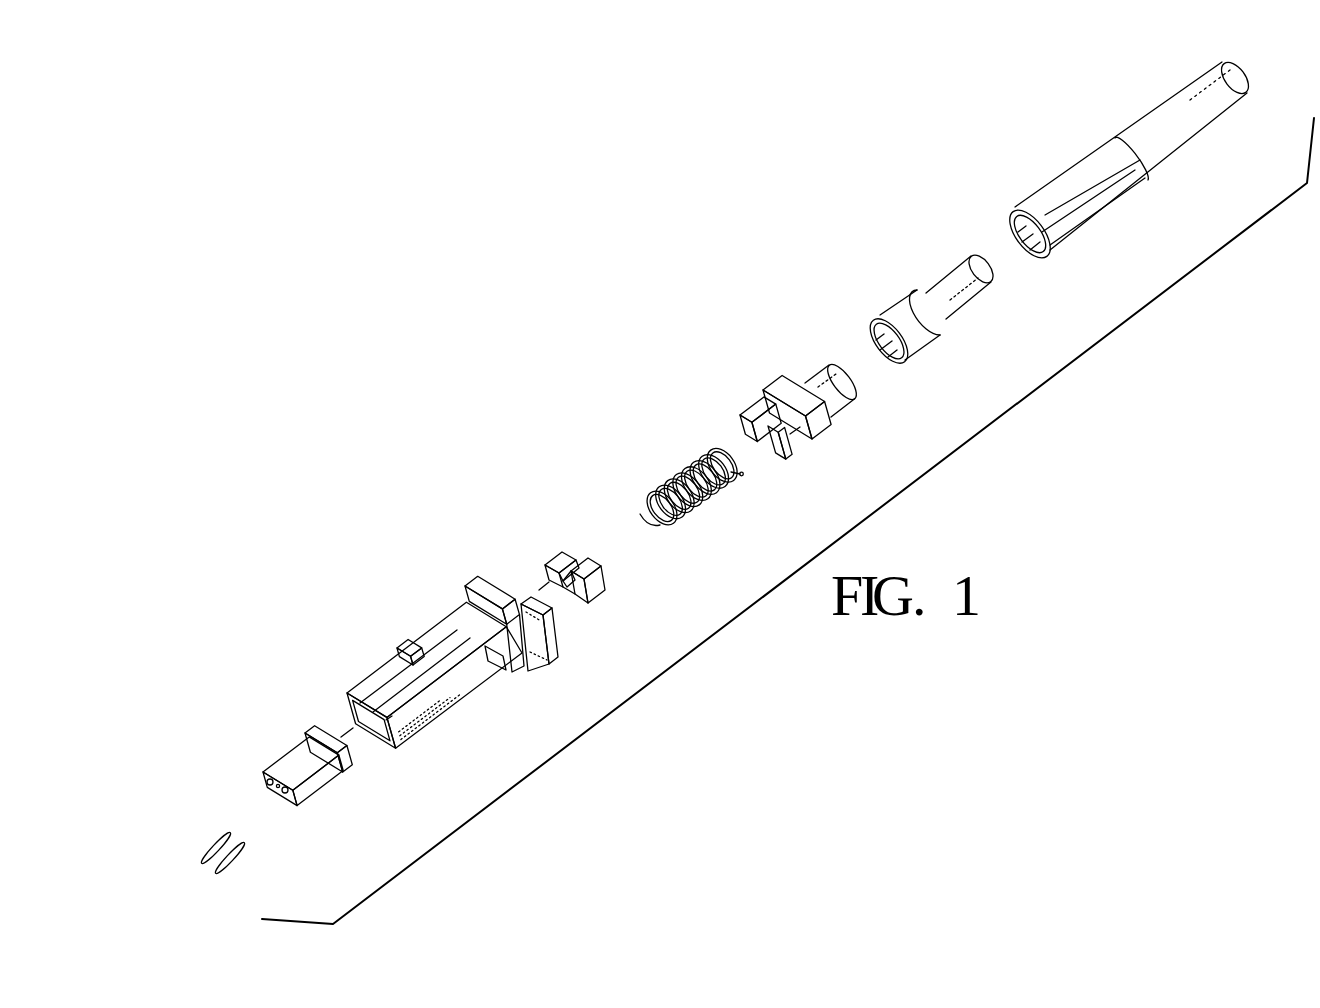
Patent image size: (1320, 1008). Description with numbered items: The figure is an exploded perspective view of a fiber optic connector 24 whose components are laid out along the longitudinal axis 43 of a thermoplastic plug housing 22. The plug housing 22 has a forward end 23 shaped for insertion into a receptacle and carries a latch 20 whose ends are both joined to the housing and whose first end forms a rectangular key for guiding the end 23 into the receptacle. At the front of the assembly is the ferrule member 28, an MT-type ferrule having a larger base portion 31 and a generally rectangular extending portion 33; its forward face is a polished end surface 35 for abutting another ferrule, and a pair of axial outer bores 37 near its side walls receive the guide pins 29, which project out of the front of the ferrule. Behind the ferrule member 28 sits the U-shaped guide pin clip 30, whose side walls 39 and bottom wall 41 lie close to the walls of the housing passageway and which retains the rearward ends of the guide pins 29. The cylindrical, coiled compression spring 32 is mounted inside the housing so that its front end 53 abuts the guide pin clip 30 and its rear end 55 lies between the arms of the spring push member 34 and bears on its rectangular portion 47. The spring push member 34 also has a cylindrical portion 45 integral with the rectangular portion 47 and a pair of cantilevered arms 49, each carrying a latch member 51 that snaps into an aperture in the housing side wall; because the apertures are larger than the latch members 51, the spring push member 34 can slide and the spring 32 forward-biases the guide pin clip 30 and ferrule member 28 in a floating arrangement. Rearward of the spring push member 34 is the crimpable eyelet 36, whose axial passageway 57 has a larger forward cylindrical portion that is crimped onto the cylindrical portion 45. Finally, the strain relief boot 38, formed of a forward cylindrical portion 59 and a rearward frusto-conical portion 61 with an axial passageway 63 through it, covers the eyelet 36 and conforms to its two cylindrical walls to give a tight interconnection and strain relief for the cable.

The latch 20 is at (480, 680).
The plug housing 22 is at (475, 680).
The end of the plug housing 23 is at (385, 748).
The connector 24 is at (993, 428).
The ferrule member 28 is at (283, 780).
The guide pins 29 is at (192, 845).
The U-shaped guide pin clip 30 is at (571, 554).
The base portion of the ferrule 31 is at (293, 746).
The coiled compression spring 32 is at (676, 455).
The extending portion of the ferrule 33 is at (315, 785).
The spring push member 34 is at (816, 417).
The end surface 35 is at (278, 790).
The crimpable eyelet 36 is at (897, 302).
The axial outer bores 37 is at (266, 784).
The strain relief boot 38 is at (1095, 164).
The side walls of the guide pin clip 39 is at (549, 561).
The bottom wall of the guide pin clip 41 is at (567, 600).
The longitudinal axis 43 is at (545, 598).
The cylindrical portion 45 is at (850, 400).
The rectangular portion 47 is at (818, 428).
The cantilevered arms 49 is at (803, 446).
The latch member 51 is at (787, 454).
The front end of the spring 53 is at (642, 516).
The rear end of the spring 55 is at (730, 452).
The axial passageway of the eyelet 57 is at (878, 345).
The forward cylindrical portion 59 is at (1087, 202).
The rearward frusto-conical portion 61 is at (1167, 125).
The axial passageway of the boot 63 is at (1022, 238).